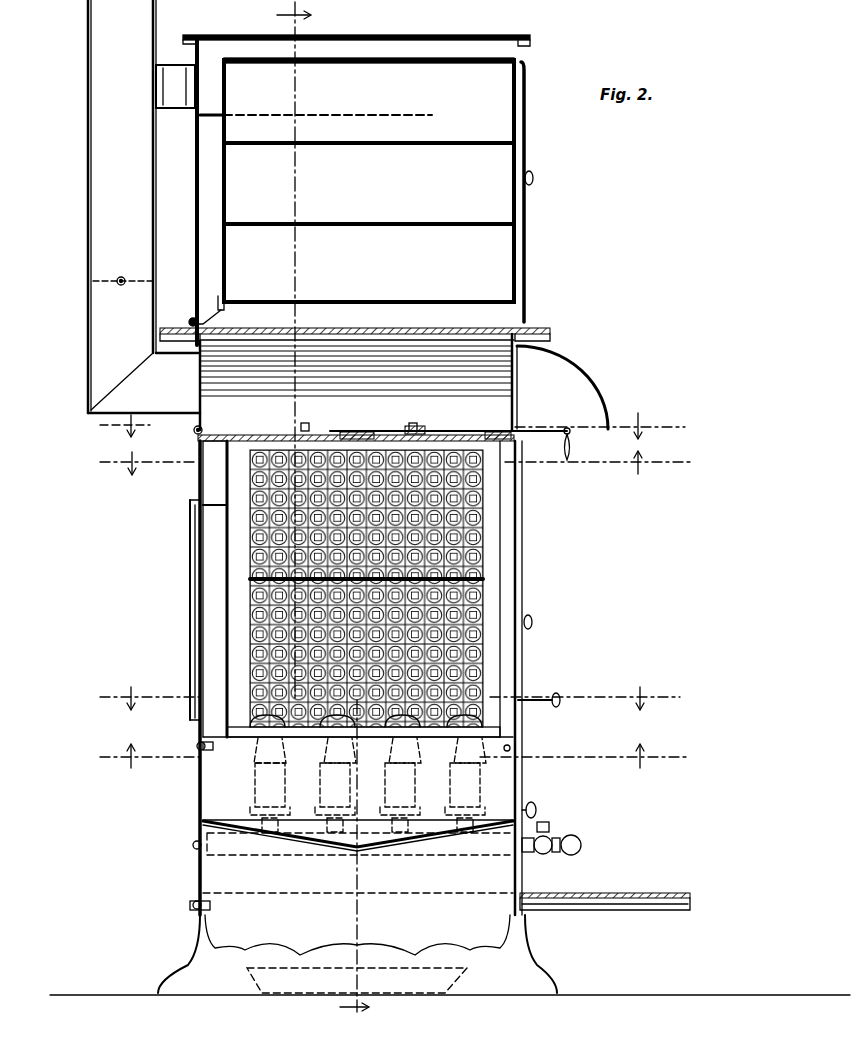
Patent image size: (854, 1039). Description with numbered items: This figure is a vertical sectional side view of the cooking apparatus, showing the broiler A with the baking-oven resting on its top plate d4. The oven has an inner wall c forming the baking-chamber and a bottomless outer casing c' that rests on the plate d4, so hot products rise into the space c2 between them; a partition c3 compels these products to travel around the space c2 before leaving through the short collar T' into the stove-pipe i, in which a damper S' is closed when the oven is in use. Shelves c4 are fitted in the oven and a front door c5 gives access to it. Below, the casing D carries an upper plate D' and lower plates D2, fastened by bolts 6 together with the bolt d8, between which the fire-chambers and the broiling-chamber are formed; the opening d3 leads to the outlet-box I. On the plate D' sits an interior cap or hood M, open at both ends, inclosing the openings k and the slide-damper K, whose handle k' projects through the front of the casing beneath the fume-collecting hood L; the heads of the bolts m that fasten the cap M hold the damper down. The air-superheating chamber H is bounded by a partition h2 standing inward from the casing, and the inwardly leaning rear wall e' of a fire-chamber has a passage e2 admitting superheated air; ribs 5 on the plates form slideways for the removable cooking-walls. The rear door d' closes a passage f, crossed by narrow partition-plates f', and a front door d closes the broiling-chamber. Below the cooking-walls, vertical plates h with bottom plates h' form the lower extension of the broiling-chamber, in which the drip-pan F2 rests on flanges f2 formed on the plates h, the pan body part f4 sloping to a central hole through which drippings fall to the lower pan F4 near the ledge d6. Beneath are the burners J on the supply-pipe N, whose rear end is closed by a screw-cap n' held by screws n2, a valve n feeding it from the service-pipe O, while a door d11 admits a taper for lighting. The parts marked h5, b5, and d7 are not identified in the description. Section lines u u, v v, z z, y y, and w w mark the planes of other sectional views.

The stove-pipe i is at (122, 206).
The outlet-box I is at (144, 383).
The short pipe or collar T' is at (175, 101).
The damper S' is at (123, 269).
The outer casing of oven c' is at (345, 175).
The inner wall of oven c is at (351, 193).
The space between oven walls c2 is at (212, 265).
The partition c3 is at (212, 117).
The shelves c4 is at (438, 141).
The front door of oven c5 is at (525, 160).
The top plate of broiler d4 is at (340, 327).
The outlet opening d3 is at (198, 380).
The interior cap or hood M is at (356, 382).
The fume-collecting hood L is at (575, 372).
The upper plate D' is at (356, 651).
The bolts or screws 6 is at (343, 595).
The openings k is at (411, 435).
The slide-damper K is at (397, 420).
The bolts or screws m is at (359, 418).
The stem or handle of damper k' is at (554, 444).
The casing D is at (345, 678).
The air-superheating chamber H is at (528, 674).
The vertical plates h is at (321, 637).
The vertical wall or partition h2 is at (500, 572).
The plate h5 is at (203, 494).
The broiler A is at (354, 701).
The rear door d' is at (177, 610).
The rear passage f is at (208, 621).
The partition-plates f' is at (209, 529).
The front door d is at (538, 604).
The rear wall of fire-chamber e' is at (366, 588).
The passage e2 is at (250, 583).
The ribs or flanges 5 is at (338, 435).
The handle b5 is at (548, 708).
The hinge d7 is at (215, 748).
The bolt d8 is at (196, 749).
The lower plates D2 is at (358, 751).
The burners J is at (368, 785).
The side lips or flanges f2 is at (203, 826).
The drip-receiving pan or funnel F2 is at (371, 835).
The inner body part of drip-pan f4 is at (355, 850).
The screw-caps n' is at (358, 857).
The gas-supply pipe N is at (420, 845).
The bottom plates h' is at (358, 881).
The screws n2 is at (194, 850).
The doors d11 is at (536, 805).
The cocks or valves n is at (544, 834).
The service-pipe O is at (580, 840).
The forwardly-extending plate or ledge d6 is at (608, 893).
The lower drip-pan F4 is at (450, 955).
The section line u is at (354, 1019).
The section line v is at (391, 426).
The section line z is at (393, 463).
The section line y is at (389, 695).
The section line w is at (394, 756).